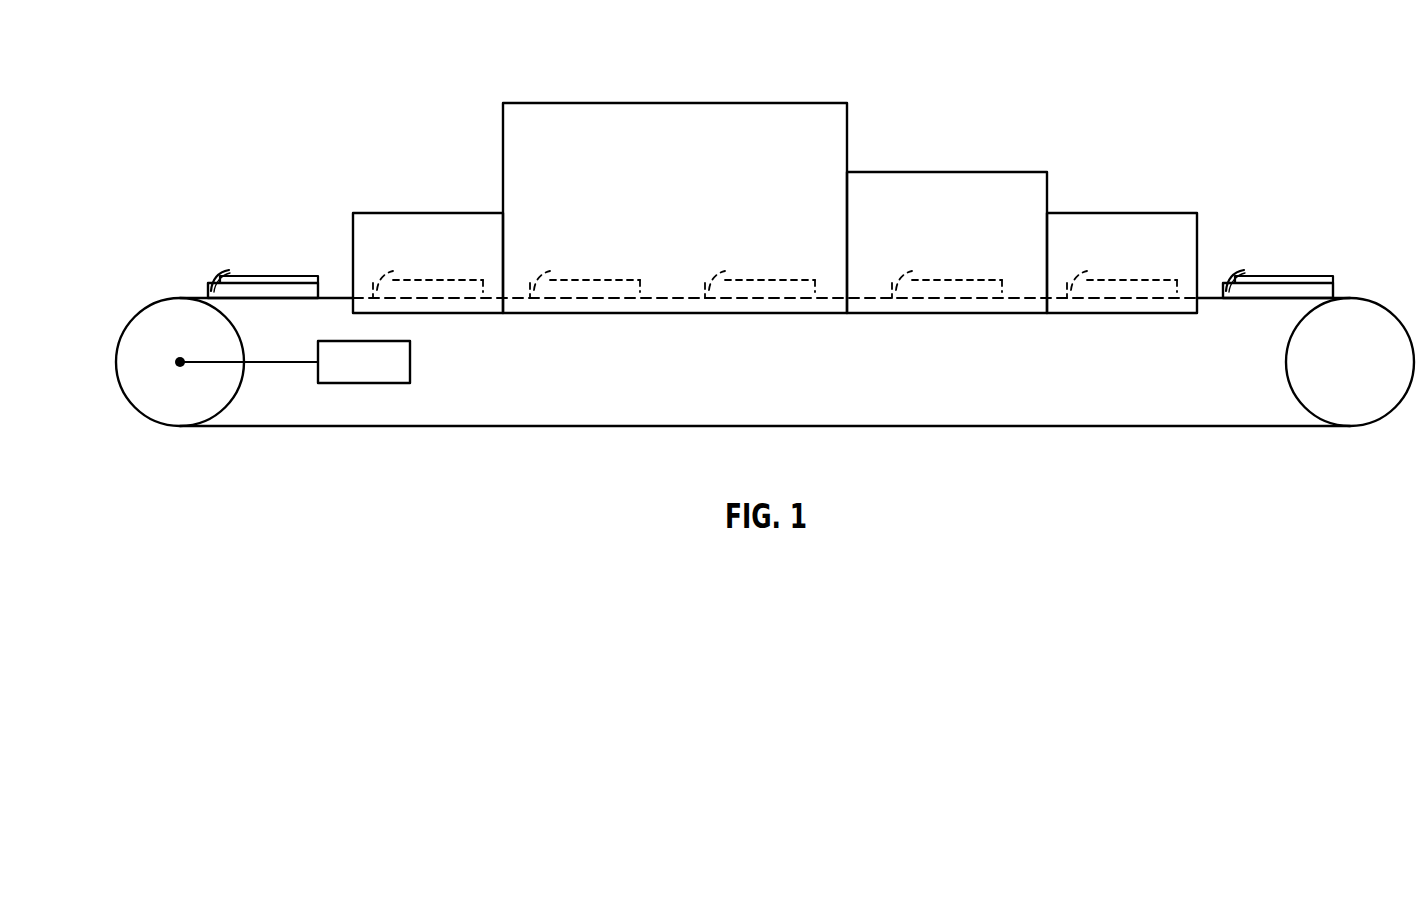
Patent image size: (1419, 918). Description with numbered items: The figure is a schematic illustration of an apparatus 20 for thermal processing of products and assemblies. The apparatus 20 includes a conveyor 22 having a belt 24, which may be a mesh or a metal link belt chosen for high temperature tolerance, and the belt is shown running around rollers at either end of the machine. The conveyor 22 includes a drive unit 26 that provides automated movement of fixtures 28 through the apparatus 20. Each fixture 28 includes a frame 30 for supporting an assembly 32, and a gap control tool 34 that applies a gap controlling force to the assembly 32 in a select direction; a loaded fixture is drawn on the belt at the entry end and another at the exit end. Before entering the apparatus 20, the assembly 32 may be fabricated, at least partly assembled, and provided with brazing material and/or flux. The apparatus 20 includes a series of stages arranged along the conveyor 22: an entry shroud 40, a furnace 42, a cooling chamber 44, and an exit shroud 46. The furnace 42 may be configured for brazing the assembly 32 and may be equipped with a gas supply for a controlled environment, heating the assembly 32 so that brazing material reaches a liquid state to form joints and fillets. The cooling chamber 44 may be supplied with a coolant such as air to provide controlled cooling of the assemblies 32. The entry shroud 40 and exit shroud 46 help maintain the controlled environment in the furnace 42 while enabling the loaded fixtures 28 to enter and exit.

The apparatus 20 is at (1083, 86).
The conveyor 22 is at (336, 288).
The belt 24 is at (1203, 297).
The drive unit 26 is at (379, 378).
The fixture 28 is at (290, 266).
The frame 30 is at (207, 288).
The assembly 32 is at (272, 275).
The gap control tool 34 is at (210, 272).
The entry shroud 40 is at (428, 212).
The furnace 42 is at (672, 102).
The cooling chamber 44 is at (945, 171).
The exit shroud 46 is at (1120, 212).